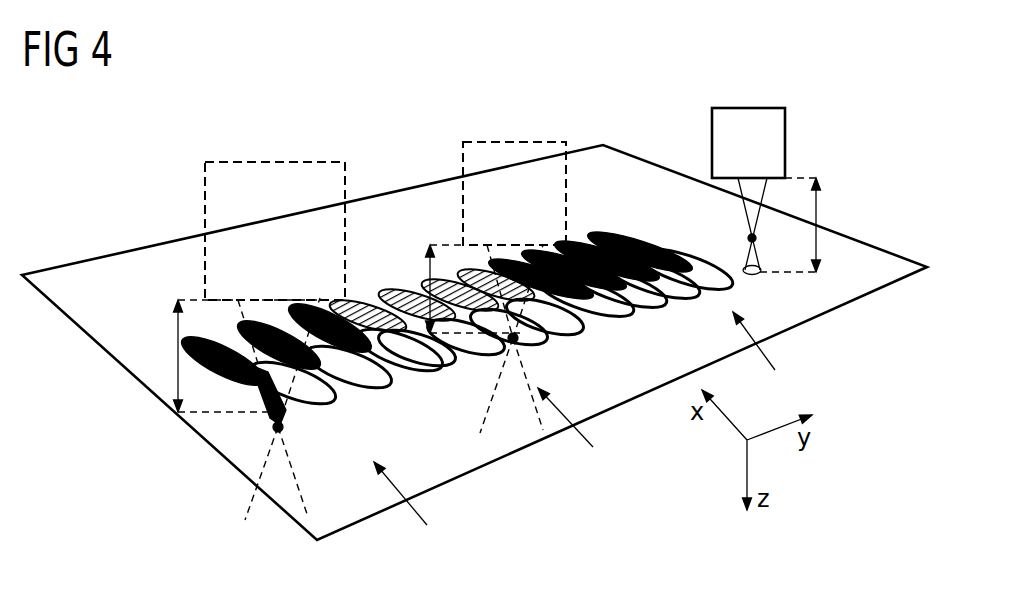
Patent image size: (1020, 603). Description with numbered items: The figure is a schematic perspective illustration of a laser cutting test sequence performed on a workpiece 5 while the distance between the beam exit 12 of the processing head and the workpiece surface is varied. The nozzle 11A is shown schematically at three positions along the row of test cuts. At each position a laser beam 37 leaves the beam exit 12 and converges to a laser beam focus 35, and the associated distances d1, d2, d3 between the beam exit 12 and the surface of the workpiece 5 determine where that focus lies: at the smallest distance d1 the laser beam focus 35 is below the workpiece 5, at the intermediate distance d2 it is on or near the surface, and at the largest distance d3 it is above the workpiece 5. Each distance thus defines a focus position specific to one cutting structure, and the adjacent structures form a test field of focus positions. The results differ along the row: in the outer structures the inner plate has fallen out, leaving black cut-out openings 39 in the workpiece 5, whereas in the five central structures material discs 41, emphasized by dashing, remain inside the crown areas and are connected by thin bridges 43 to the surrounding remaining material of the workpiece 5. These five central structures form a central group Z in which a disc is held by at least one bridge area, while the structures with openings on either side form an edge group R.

The workpiece 5 is at (883, 270).
The nozzle 11A is at (280, 162).
The beam exit 12 is at (263, 292).
The laser beam focus 35 is at (283, 430).
The laser beam 37 is at (340, 398).
The cut-out openings 39 is at (222, 384).
The material discs 41 is at (447, 277).
The bridges 43 is at (468, 358).
The distance d1 is at (178, 338).
The distance d2 is at (430, 275).
The distance d3 is at (820, 222).
The edge group R is at (587, 430).
The central group Z is at (579, 430).